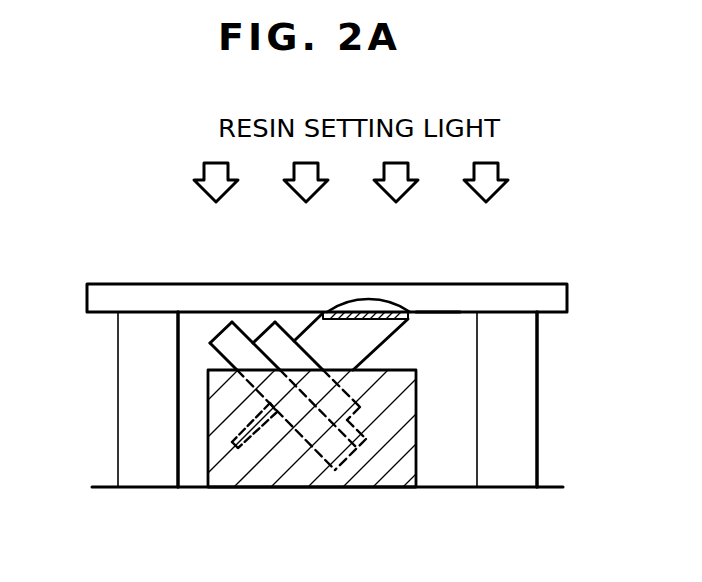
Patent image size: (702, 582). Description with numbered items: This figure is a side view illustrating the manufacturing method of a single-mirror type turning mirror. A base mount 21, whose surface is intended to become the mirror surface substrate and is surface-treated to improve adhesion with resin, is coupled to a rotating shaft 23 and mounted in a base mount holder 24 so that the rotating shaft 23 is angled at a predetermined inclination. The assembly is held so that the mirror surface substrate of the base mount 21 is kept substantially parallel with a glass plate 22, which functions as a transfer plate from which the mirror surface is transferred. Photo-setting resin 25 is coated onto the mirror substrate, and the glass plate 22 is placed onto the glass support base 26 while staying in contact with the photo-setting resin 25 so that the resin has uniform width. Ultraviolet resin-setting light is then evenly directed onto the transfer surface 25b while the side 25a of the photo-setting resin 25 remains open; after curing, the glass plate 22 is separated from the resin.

The base mount 21 is at (220, 343).
The glass plate 22 is at (135, 290).
The rotating shaft 23 is at (240, 447).
The base mount holder 24 is at (360, 483).
The photo-setting resin 25 is at (365, 323).
The side of the photo-setting resin 25a is at (432, 313).
The transfer surface 25b is at (373, 298).
The glass support base 26 is at (135, 427).